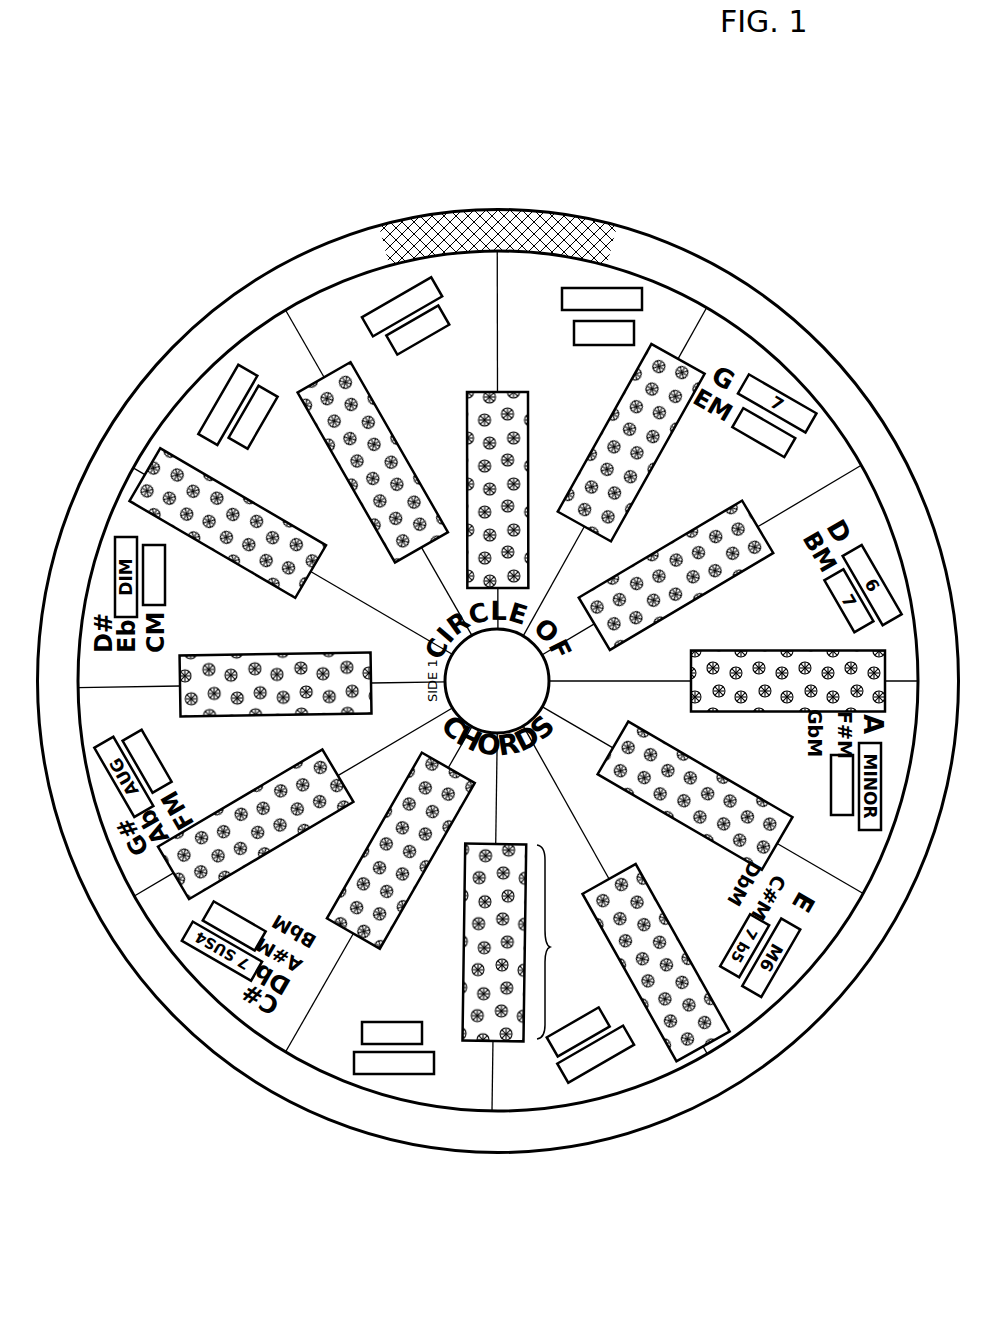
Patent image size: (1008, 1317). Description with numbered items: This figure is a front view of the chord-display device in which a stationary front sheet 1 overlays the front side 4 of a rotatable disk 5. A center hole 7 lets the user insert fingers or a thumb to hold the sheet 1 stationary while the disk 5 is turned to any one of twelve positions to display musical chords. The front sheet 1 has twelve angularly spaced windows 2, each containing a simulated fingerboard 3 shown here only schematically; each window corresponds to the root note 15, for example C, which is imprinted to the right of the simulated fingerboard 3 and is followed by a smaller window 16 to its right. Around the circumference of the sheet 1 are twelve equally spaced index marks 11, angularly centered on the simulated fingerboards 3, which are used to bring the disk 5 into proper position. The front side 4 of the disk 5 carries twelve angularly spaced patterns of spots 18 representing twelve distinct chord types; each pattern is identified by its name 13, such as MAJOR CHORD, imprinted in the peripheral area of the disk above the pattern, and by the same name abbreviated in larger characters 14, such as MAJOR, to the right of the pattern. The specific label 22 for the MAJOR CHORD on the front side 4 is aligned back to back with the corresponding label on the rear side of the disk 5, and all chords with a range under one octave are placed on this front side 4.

The front sheet 1 is at (785, 360).
The windows 2 is at (327, 372).
The simulated fingerboards 3 is at (550, 947).
The front side 4 is at (787, 337).
The disk 5 is at (767, 297).
The center hole 7 is at (497, 681).
The index marks 11 is at (345, 356).
The name 13 is at (691, 298).
The abbreviated characters 14 is at (208, 403).
The root note 15 is at (552, 293).
The smaller window 16 is at (613, 287).
The spots 18 is at (703, 1013).
The labels 22 is at (509, 209).